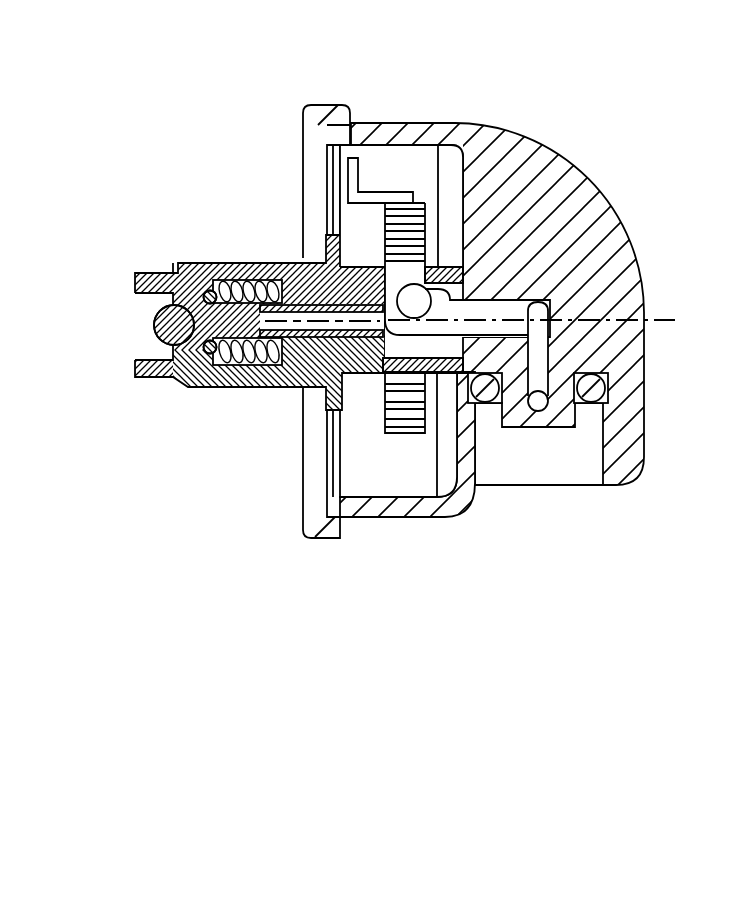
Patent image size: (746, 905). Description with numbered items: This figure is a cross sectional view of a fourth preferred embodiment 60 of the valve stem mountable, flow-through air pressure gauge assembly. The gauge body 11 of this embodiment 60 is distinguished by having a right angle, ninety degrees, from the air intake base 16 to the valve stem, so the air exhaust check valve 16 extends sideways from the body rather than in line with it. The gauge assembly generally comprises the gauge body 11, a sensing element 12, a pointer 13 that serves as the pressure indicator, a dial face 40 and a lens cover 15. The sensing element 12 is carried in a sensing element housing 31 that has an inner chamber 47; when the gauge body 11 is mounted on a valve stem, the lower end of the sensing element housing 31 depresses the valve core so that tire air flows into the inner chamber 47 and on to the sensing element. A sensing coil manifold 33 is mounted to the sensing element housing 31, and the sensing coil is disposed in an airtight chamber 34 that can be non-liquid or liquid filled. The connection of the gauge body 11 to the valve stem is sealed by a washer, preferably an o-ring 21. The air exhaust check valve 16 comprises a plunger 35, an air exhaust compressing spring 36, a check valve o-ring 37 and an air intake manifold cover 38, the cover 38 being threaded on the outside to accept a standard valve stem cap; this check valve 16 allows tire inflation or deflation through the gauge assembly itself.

The fourth preferred embodiment 60 is at (270, 108).
The gauge body 11 is at (535, 155).
The sensing element 12 is at (387, 427).
The pointer 13 is at (360, 153).
The lens cover 15 is at (313, 173).
The air exhaust check valve 16 is at (150, 301).
The o-ring 21 is at (612, 385).
The sensing element housing 31 is at (440, 342).
The sensing coil manifold 33 is at (303, 292).
The airtight chamber 34 is at (413, 167).
The plunger 35 is at (165, 325).
The air exhaust compressing spring 36 is at (260, 297).
The check valve o-ring 37 is at (217, 297).
The air intake manifold cover 38 is at (187, 370).
The dial face 40 is at (320, 448).
The inner chamber 47 is at (550, 350).